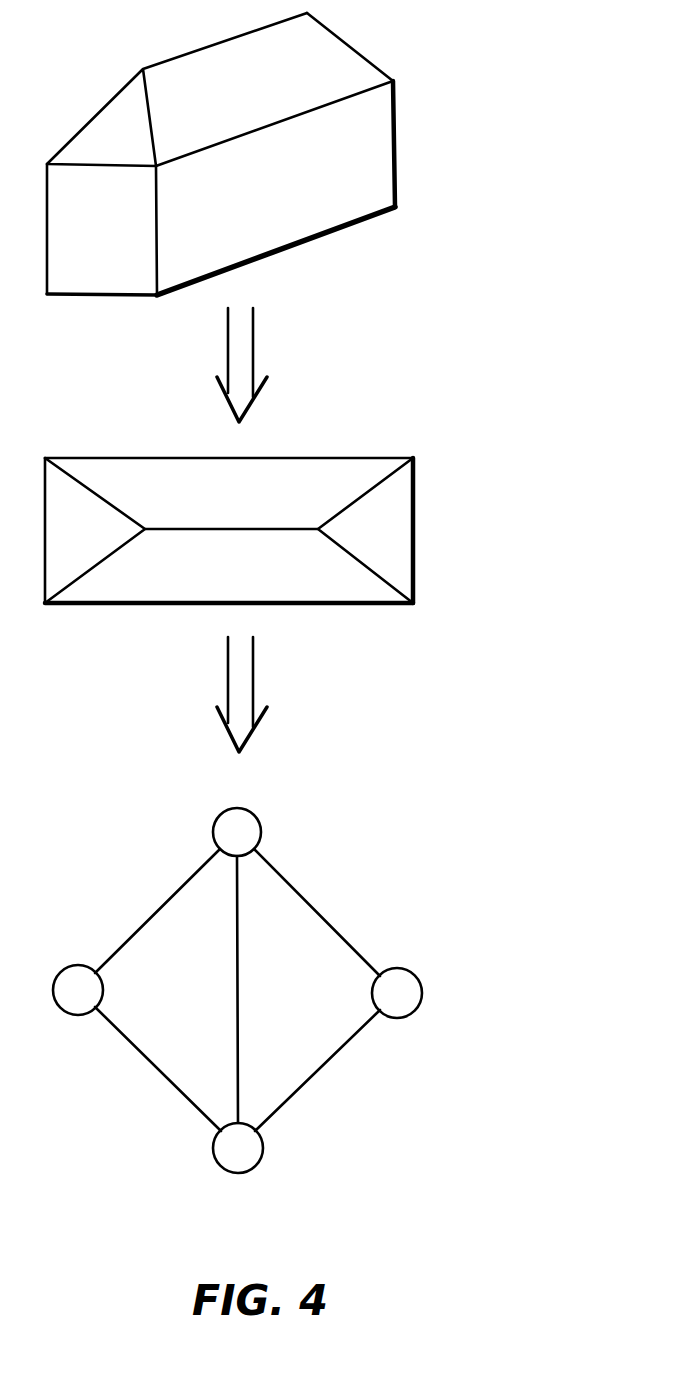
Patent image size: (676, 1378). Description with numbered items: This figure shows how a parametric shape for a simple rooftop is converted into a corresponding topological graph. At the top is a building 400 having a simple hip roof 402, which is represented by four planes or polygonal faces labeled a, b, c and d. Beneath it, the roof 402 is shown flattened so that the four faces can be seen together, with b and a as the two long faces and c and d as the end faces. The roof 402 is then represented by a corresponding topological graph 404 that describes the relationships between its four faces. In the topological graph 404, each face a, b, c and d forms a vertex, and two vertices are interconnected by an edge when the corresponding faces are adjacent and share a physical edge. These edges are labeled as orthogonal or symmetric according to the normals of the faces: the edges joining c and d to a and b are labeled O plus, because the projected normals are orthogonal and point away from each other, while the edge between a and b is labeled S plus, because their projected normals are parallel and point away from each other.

The building 400 is at (430, 148).
The roof 402 is at (452, 552).
The topological graph 404 is at (430, 935).